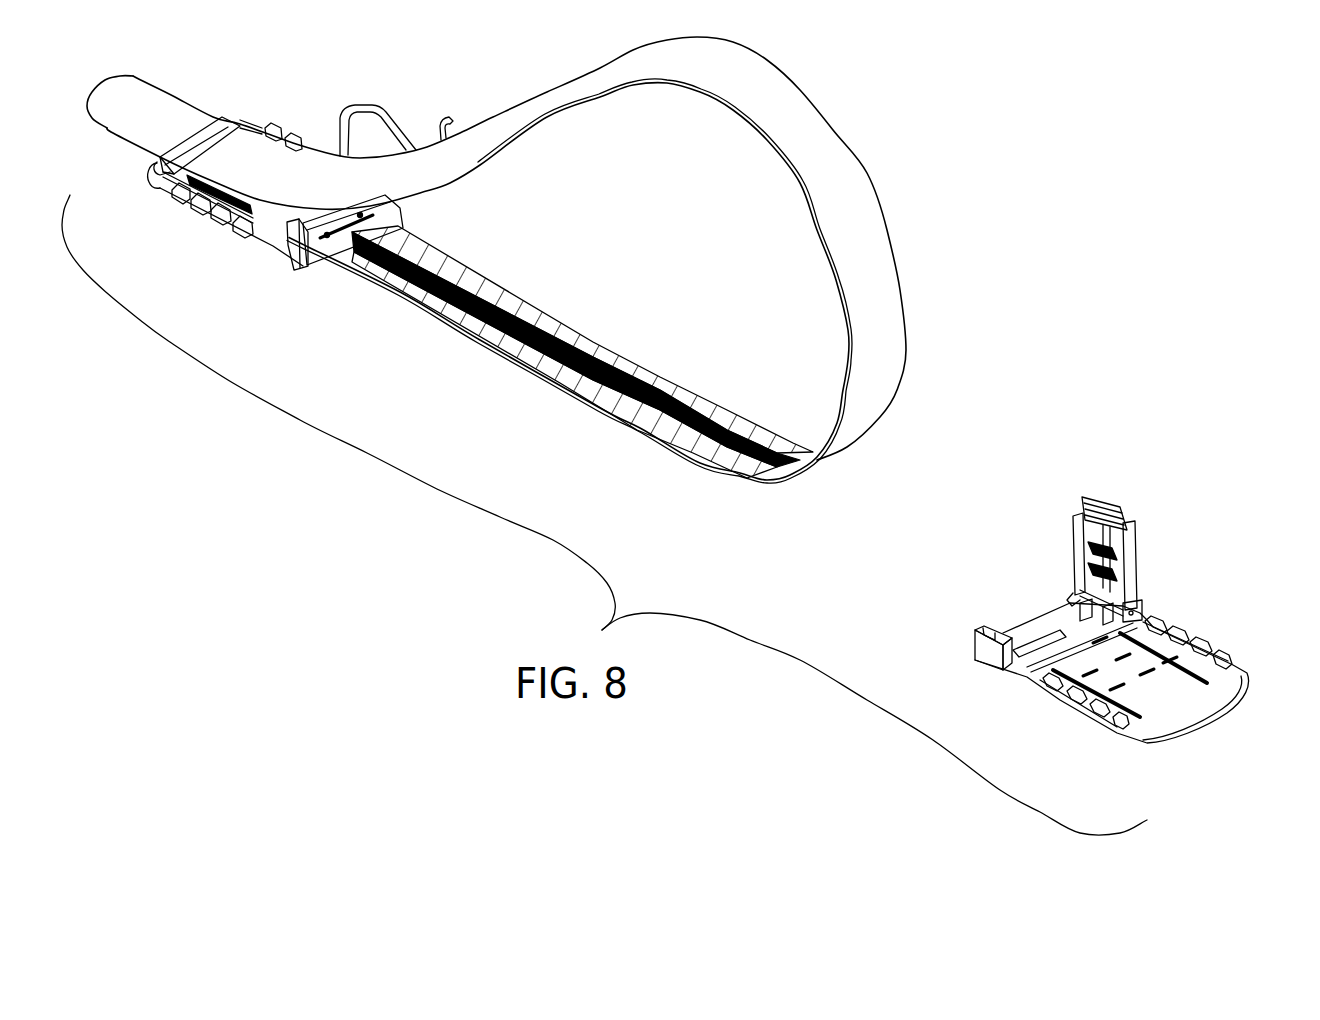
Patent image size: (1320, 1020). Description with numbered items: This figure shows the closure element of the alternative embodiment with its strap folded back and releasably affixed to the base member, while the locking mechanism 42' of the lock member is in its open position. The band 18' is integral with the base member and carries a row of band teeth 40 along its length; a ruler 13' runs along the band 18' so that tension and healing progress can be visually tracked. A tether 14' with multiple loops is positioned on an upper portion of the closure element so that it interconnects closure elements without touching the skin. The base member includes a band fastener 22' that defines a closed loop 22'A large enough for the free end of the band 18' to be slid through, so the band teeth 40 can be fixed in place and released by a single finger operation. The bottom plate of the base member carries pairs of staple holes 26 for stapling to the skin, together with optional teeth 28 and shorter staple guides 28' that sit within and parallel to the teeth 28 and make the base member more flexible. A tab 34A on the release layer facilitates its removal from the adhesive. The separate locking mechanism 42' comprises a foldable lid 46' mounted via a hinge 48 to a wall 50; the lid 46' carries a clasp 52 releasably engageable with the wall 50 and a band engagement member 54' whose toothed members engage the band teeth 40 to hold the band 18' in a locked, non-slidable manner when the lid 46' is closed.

The ruler 13' is at (496, 260).
The tether 14' is at (396, 102).
The band 18' is at (582, 352).
The band fastener 22' is at (208, 117).
The closed loop 22'A is at (136, 190).
The staple holes 26 is at (1215, 675).
The teeth 28 is at (734, 478).
The staple guides 28' is at (730, 443).
The tab 34A is at (323, 272).
The band teeth 40 is at (596, 355).
The locking mechanism 42' is at (1284, 557).
The foldable lid 46' is at (1131, 548).
The hinge 48 is at (1142, 612).
The wall 50 is at (1000, 657).
The clasp 52 is at (1087, 515).
The band engagement member 54' is at (1054, 554).